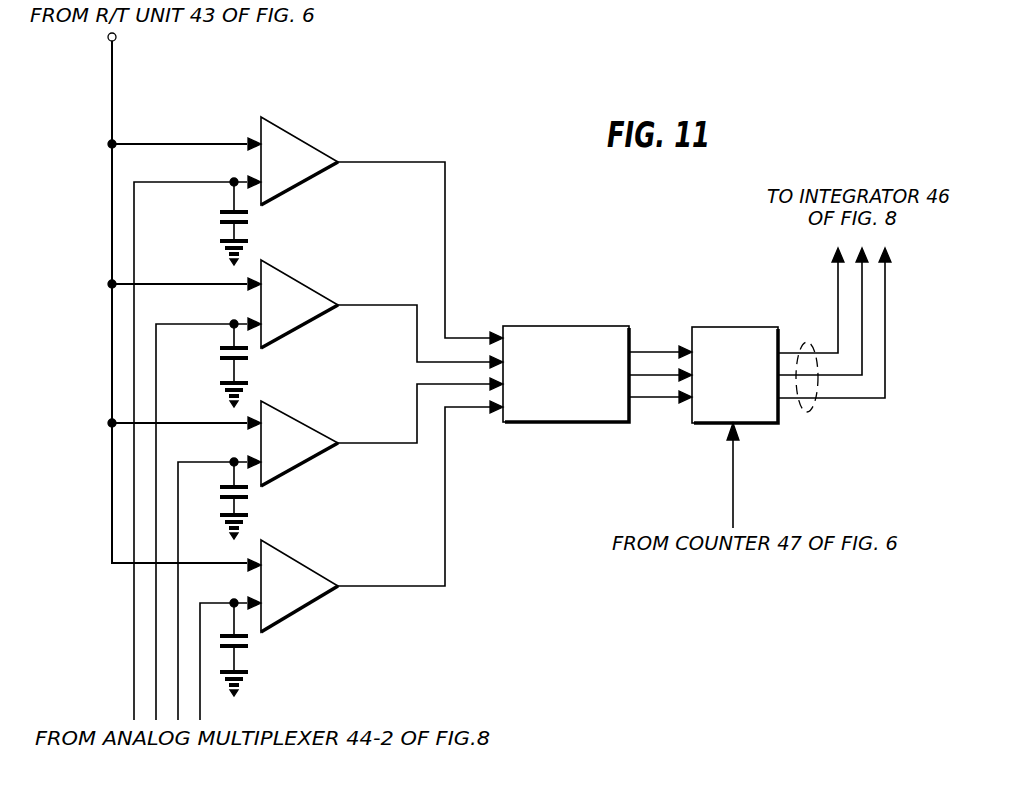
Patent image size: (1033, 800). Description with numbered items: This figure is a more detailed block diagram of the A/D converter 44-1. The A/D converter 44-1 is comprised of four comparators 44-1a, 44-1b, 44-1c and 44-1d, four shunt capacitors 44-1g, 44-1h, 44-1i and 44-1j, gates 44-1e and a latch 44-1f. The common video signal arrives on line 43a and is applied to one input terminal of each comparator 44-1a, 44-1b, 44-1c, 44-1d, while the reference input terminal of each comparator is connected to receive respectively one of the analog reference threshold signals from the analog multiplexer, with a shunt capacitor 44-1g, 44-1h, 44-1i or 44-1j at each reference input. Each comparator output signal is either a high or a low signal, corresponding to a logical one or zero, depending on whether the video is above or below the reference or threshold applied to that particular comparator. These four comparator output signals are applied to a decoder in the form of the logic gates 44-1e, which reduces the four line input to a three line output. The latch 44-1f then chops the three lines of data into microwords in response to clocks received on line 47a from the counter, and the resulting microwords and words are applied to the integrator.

The line 43a is at (113, 102).
The A/D converter 44-1 is at (473, 310).
The comparator 44-1a is at (303, 140).
The comparator 44-1b is at (307, 285).
The comparator 44-1c is at (305, 425).
The comparator 44-1d is at (303, 572).
The gates 44-1e is at (573, 303).
The latch 44-1f is at (712, 325).
The shunt capacitor 44-1g is at (249, 222).
The shunt capacitor 44-1h is at (249, 358).
The shunt capacitor 44-1i is at (249, 497).
The shunt capacitor 44-1j is at (249, 644).
The line 47a is at (732, 490).